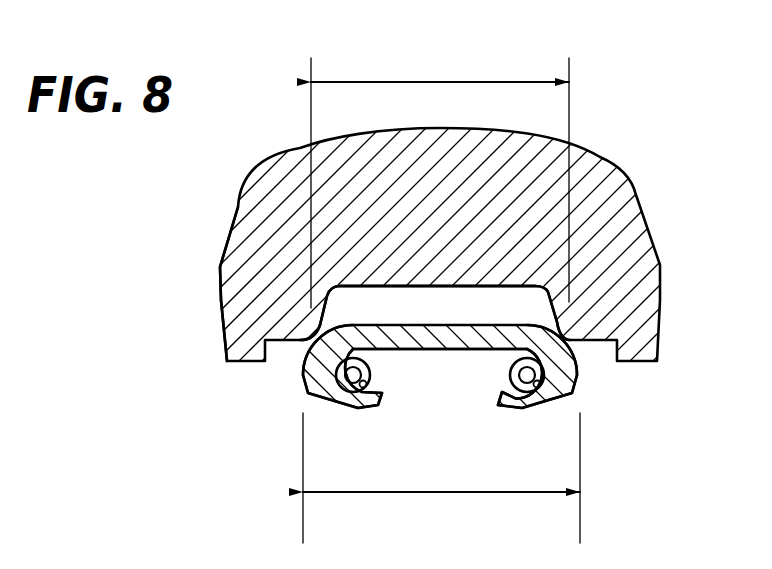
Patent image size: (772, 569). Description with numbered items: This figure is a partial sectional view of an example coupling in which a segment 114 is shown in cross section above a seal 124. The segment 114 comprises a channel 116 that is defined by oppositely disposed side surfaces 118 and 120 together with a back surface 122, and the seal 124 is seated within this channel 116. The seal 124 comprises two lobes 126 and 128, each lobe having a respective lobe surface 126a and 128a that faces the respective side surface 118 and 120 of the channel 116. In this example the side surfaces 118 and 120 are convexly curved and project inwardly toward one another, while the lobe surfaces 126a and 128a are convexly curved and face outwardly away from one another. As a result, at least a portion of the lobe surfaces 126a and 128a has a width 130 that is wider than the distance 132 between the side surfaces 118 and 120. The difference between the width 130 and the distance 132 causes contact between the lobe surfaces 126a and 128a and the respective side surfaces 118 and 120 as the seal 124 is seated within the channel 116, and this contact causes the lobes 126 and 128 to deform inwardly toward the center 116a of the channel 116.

The segment 114 is at (638, 273).
The channel 116 is at (532, 292).
The center of channel 116a is at (440, 302).
The side surface 118 is at (317, 318).
The side surface 120 is at (563, 326).
The back surface 122 is at (418, 287).
The seal 124 is at (480, 350).
The lobe 126 is at (323, 400).
The lobe surface 126a is at (300, 367).
The lobe 128 is at (560, 397).
The lobe surface 128a is at (580, 363).
The width 130 is at (378, 493).
The distance 132 is at (468, 80).